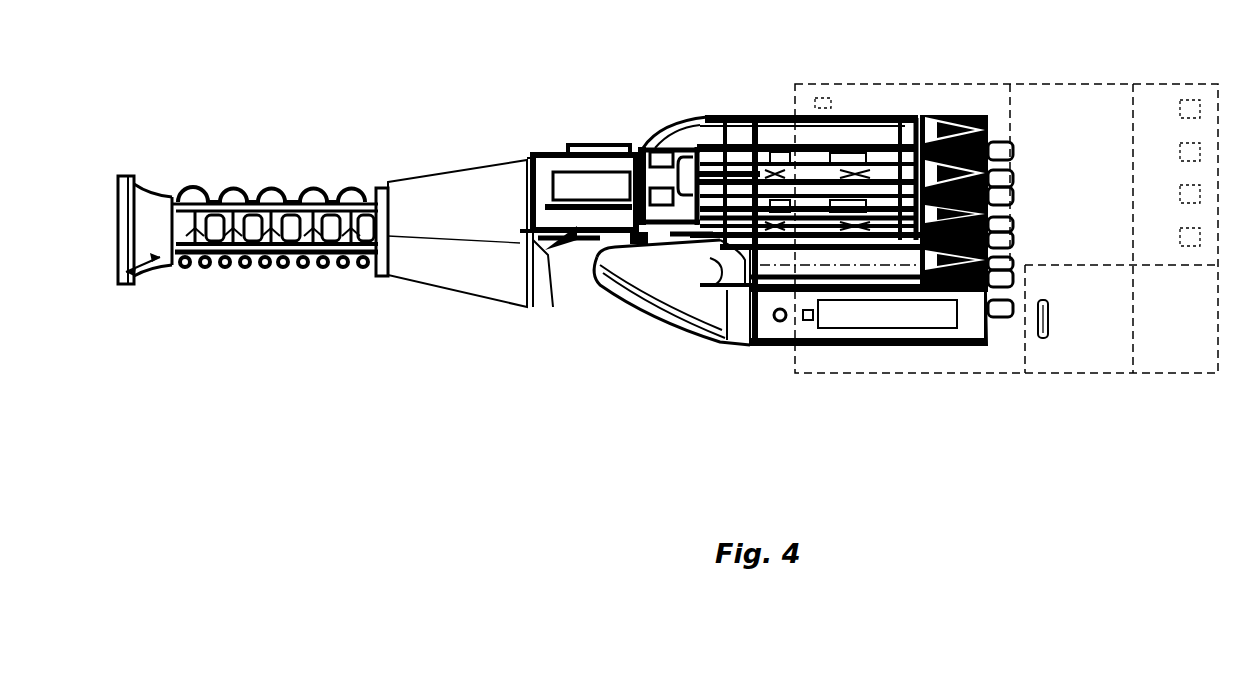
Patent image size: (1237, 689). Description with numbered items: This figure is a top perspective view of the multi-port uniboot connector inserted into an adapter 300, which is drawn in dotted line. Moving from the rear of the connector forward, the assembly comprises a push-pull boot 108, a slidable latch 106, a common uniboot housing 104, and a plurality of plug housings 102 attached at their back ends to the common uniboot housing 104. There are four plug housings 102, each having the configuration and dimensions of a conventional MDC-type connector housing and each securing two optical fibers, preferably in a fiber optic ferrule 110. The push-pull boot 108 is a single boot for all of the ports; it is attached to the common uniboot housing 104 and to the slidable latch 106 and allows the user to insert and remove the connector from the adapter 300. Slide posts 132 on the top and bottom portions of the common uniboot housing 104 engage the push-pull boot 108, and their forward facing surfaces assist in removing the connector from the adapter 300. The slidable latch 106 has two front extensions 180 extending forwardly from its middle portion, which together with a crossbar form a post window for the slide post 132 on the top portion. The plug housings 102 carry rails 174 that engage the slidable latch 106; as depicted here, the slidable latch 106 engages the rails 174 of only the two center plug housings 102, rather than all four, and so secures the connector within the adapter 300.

The plug housings 102 is at (962, 342).
The common uniboot housing 104 is at (655, 322).
The slidable latch 106 is at (543, 252).
The push-pull boot 108 is at (281, 192).
The fiber optic ferrule 110 is at (1000, 140).
The slide posts 132 is at (705, 180).
The rails 174 is at (880, 113).
The front extensions 180 is at (845, 163).
The adapter 300 is at (1082, 375).